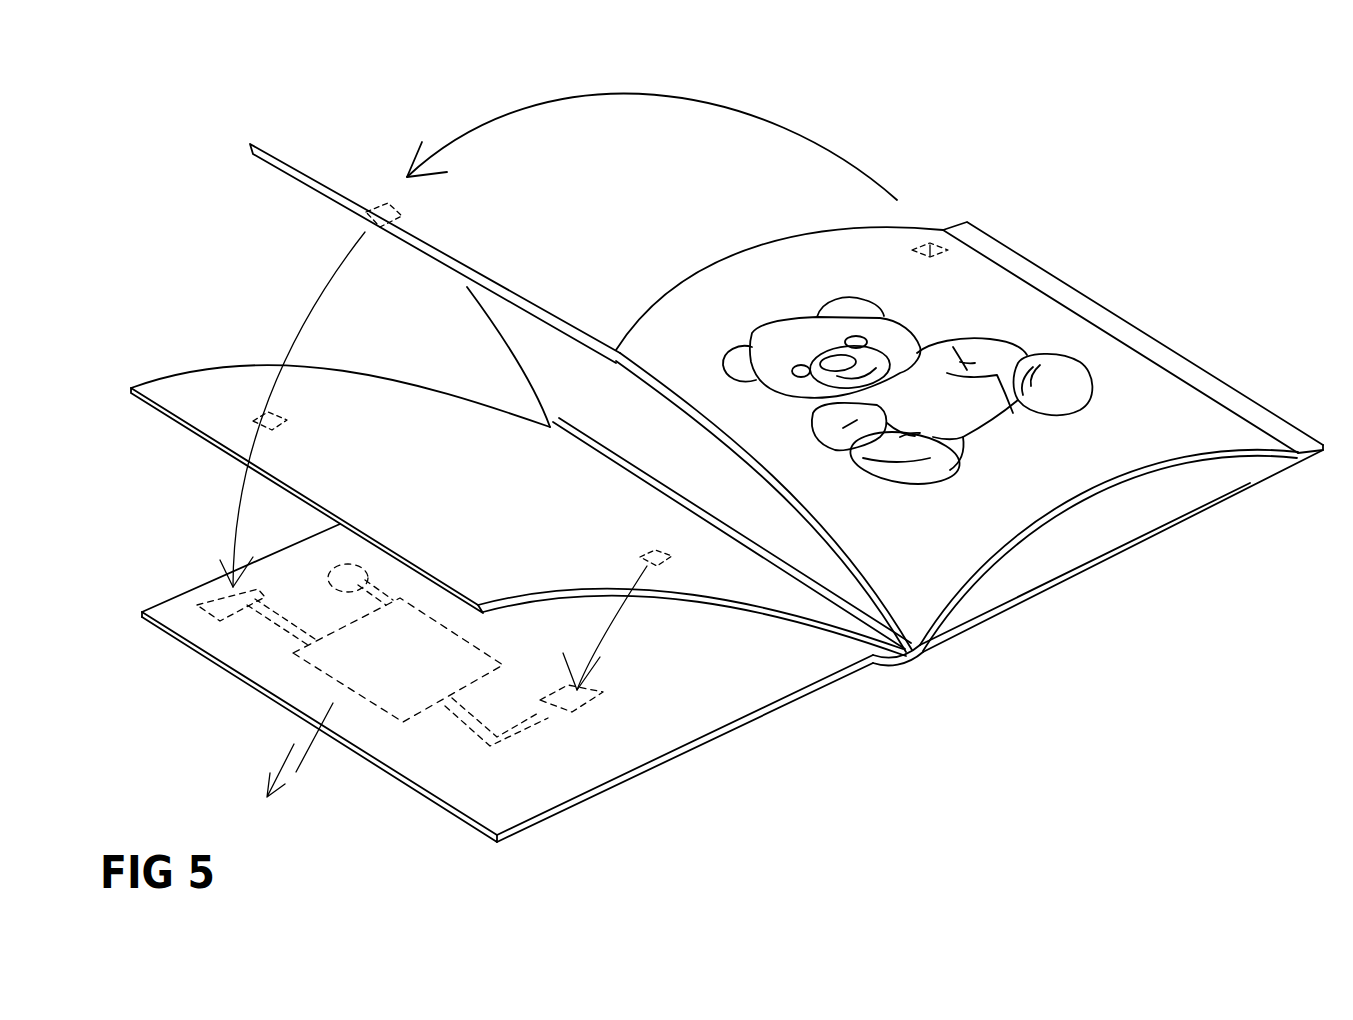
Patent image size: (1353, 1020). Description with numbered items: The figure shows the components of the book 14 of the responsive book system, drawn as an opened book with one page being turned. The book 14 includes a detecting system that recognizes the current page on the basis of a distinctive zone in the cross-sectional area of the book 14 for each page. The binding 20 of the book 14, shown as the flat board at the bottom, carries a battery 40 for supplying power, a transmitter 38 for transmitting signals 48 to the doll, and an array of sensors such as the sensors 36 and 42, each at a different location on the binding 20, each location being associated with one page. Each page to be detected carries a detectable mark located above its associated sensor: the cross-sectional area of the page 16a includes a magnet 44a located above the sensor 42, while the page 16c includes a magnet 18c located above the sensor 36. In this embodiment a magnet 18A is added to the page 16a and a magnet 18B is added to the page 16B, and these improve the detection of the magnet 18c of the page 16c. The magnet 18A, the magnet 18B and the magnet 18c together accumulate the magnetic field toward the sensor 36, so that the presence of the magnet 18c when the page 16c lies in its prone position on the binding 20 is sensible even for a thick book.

The book 14 is at (200, 233).
The page 16a is at (237, 403).
The page 16B is at (293, 178).
The page 16c is at (1213, 435).
The magnet 18A is at (263, 410).
The magnet 18B is at (380, 212).
The magnet 18c is at (930, 246).
The binding 20 is at (167, 613).
The sensor 36 is at (217, 600).
The transmitter 38 is at (343, 662).
The battery 40 is at (340, 580).
The sensor 42 is at (578, 704).
The magnet 44a is at (641, 555).
The signals 48 is at (286, 771).